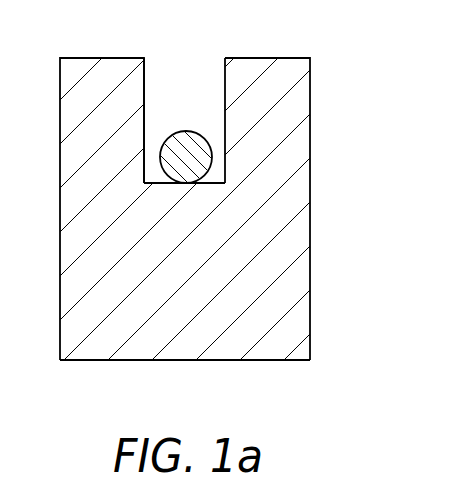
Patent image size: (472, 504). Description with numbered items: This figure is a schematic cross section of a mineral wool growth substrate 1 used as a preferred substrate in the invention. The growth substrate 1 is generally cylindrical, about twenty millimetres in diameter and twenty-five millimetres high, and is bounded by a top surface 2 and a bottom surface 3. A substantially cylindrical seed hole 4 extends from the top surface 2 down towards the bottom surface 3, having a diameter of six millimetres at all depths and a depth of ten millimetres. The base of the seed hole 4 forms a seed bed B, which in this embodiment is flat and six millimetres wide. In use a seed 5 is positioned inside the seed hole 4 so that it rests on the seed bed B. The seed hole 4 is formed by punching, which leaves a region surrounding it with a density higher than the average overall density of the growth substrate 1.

The growth substrate 1 is at (68, 158).
The top surface 2 is at (97, 57).
The bottom surface 3 is at (191, 362).
The seed hole 4 is at (183, 60).
The seed 5 is at (186, 131).
The seed bed B is at (147, 186).